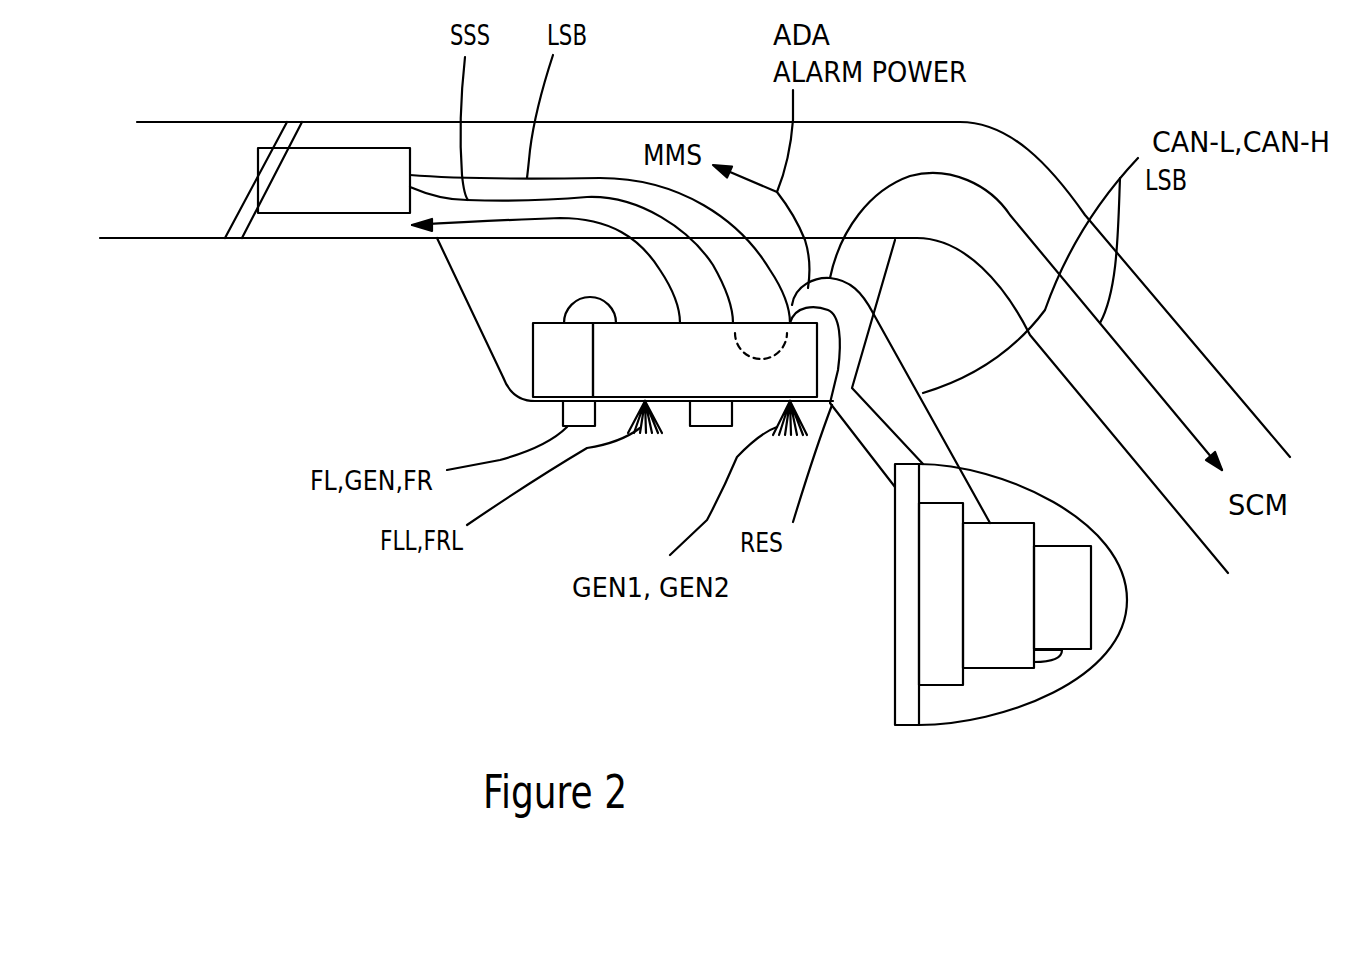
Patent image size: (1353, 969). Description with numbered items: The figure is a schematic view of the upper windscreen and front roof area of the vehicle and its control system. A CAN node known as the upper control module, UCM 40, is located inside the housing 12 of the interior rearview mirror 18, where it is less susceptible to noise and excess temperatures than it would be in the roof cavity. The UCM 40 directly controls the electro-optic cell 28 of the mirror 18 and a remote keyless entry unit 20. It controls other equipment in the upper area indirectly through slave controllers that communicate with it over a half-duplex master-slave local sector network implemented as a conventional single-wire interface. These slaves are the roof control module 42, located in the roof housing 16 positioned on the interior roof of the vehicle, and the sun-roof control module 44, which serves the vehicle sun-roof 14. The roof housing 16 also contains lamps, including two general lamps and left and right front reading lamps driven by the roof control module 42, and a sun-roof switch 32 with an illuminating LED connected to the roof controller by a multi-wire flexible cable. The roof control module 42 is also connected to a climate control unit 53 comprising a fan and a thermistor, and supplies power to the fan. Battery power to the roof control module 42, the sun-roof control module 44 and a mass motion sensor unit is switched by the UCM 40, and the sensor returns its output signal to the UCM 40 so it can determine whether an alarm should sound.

The housing 12 is at (1060, 697).
The vehicle sun-roof 14 is at (212, 158).
The roof housing 16 is at (888, 273).
The interior rearview mirror 18 is at (862, 648).
The remote keyless entry (RKE) unit 20 is at (1091, 590).
The electro-optic cell (EC) 28 is at (941, 594).
The sun-roof switch 32 is at (723, 428).
The upper control module (UCM) 40 is at (1012, 595).
The roof control module (RCM) 42 is at (635, 396).
The sun-roof control module (SRCM) 44 is at (334, 180).
The climate control unit 53 is at (533, 352).